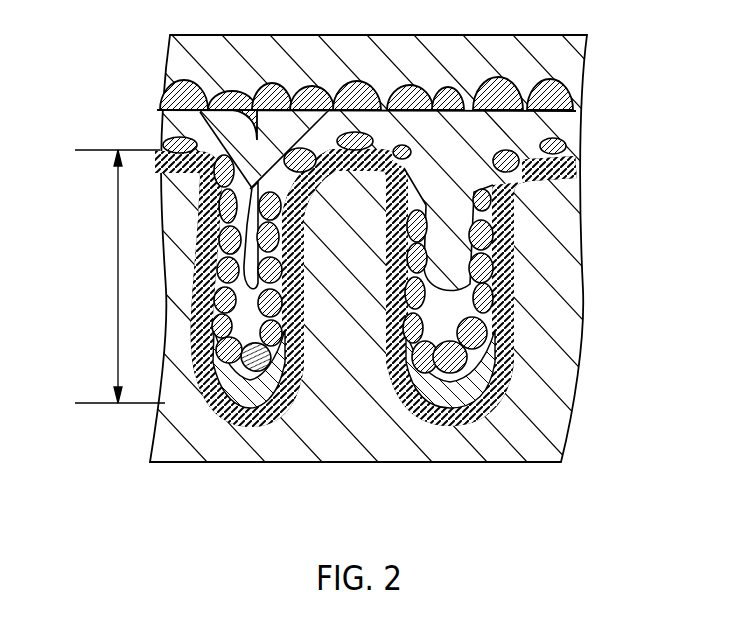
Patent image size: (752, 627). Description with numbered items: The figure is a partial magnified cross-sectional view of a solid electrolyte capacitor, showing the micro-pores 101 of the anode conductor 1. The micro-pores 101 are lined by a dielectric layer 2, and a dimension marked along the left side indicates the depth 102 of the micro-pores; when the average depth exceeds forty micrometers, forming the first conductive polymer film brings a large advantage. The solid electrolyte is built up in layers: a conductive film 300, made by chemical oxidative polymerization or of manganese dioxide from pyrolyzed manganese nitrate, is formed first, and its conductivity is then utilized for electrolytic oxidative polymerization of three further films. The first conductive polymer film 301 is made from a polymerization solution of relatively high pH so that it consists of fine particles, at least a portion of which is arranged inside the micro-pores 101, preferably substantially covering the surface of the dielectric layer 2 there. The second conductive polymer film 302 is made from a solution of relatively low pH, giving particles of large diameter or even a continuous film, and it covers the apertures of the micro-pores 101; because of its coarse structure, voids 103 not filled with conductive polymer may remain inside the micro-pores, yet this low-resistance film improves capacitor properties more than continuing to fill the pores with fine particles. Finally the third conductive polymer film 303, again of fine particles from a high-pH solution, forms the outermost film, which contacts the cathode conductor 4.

The anode conductor 1 is at (560, 403).
The micro-pores 101 is at (413, 407).
The depth 102 is at (118, 275).
The voids 103 is at (458, 303).
The dielectric layer 2 is at (568, 165).
The conductive film 300 is at (478, 418).
The first conductive polymer film 301 is at (490, 332).
The second conductive polymer film 302 is at (568, 122).
The third conductive polymer film 303 is at (573, 97).
The cathode conductor 4 is at (568, 63).